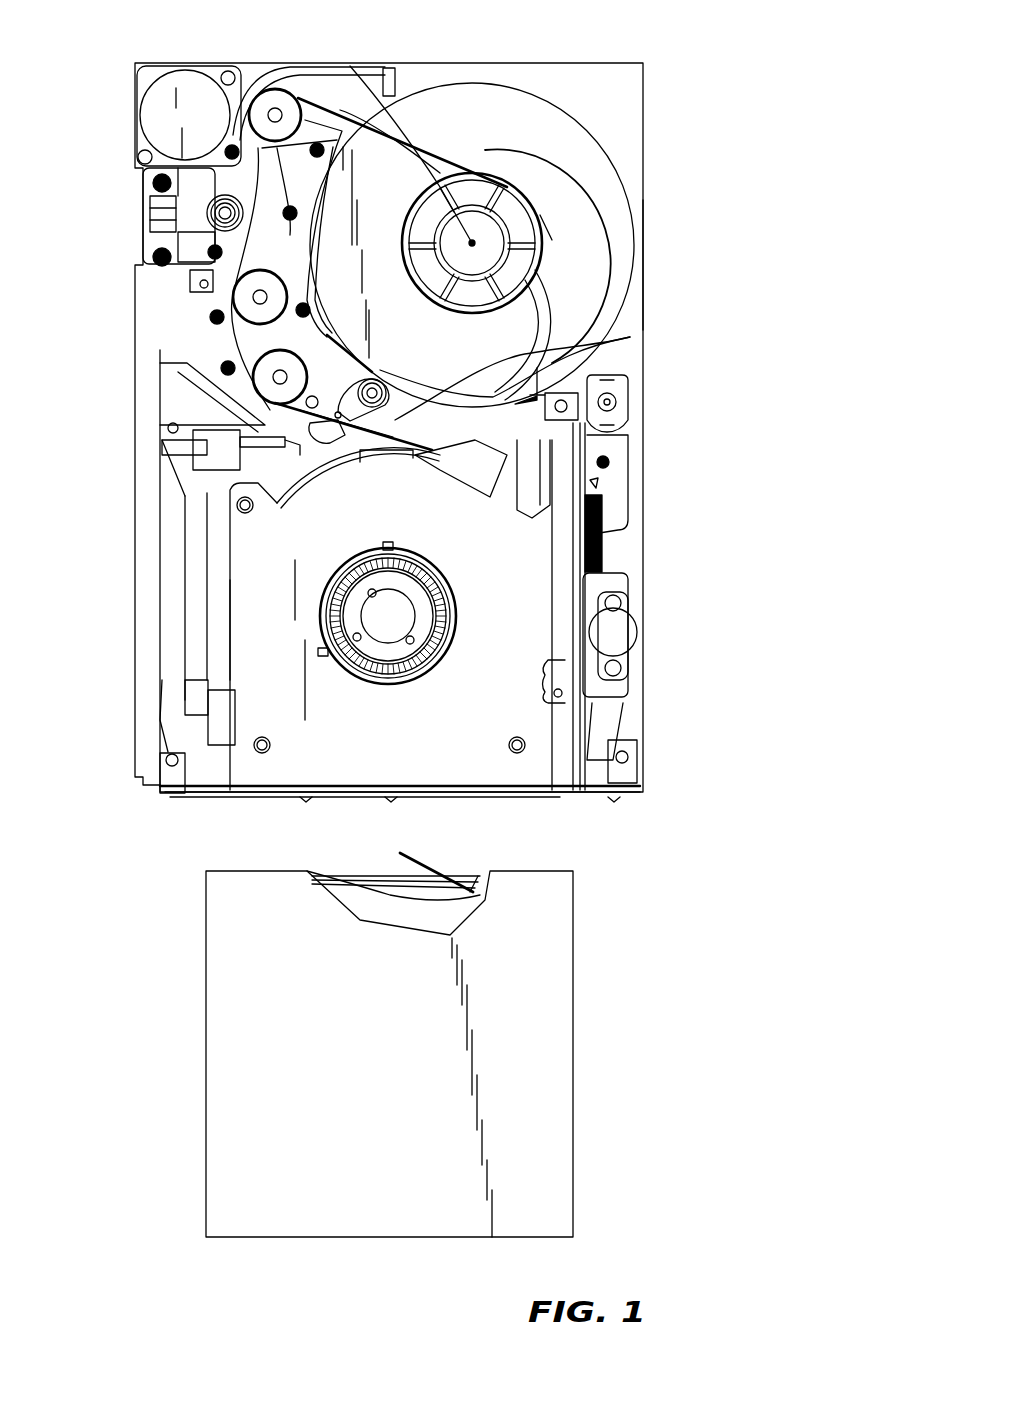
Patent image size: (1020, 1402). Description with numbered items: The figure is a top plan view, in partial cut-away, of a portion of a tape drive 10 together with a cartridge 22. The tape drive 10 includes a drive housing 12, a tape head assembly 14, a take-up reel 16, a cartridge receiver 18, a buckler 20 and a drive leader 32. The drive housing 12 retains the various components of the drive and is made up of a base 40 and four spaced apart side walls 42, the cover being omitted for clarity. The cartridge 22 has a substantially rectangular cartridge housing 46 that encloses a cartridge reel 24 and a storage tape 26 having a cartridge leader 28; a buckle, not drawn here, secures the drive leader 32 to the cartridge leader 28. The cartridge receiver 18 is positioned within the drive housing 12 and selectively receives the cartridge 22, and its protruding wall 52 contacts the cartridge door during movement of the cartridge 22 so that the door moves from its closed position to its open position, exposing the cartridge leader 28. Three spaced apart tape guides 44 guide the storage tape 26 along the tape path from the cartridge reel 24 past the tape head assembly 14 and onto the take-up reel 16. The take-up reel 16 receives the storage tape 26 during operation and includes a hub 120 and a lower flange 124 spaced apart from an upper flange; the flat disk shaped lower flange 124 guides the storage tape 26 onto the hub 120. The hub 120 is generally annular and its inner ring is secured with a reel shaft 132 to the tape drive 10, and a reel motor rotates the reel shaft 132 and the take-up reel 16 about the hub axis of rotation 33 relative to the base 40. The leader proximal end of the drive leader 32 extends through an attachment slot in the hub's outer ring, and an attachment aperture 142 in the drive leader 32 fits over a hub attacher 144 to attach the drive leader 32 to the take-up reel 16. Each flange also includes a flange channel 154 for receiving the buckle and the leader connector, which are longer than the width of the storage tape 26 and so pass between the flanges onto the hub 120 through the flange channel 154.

The tape drive 10 is at (662, 372).
The drive housing 12 is at (647, 607).
The tape head assembly 14 is at (152, 217).
The take-up reel 16 is at (568, 176).
The cartridge receiver 18 is at (528, 763).
The buckler 20 is at (395, 420).
The cartridge 22 is at (590, 991).
The cartridge reel 24 is at (360, 905).
The storage tape 26 is at (465, 890).
The cartridge leader 28 is at (405, 866).
The drive leader 32 is at (290, 458).
The hub axis of rotation 33 is at (348, 63).
The base 40 is at (612, 102).
The side walls 42 is at (643, 263).
The tape guides 44 is at (255, 368).
The cartridge housing 46 is at (573, 1030).
The protruding wall 52 is at (195, 665).
The hub 120 is at (525, 232).
The lower flange 124 is at (452, 98).
The reel shaft 132 is at (552, 240).
The attachment aperture 142 is at (490, 168).
The hub attacher 144 is at (507, 172).
The flange channel 154 is at (588, 303).